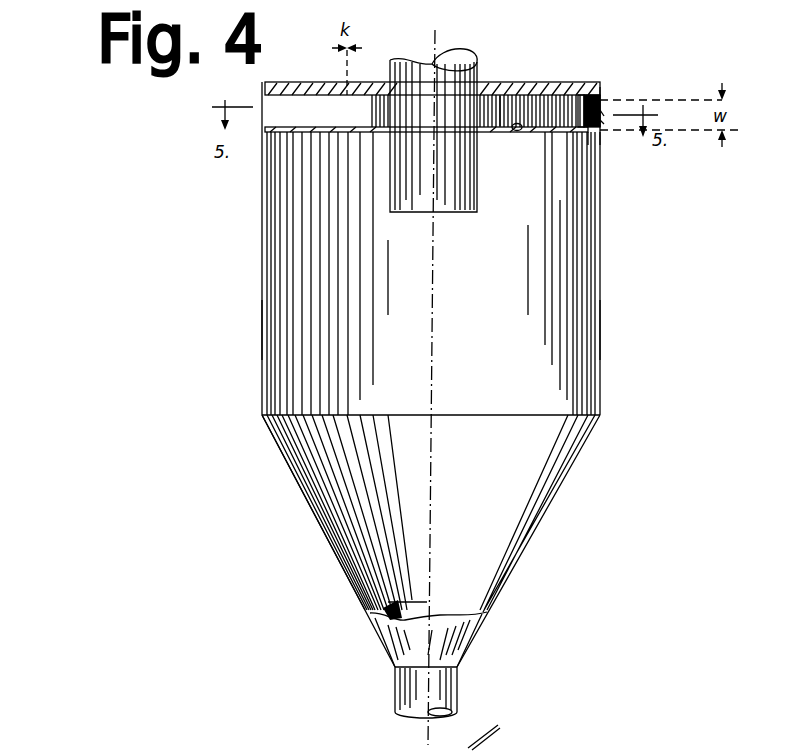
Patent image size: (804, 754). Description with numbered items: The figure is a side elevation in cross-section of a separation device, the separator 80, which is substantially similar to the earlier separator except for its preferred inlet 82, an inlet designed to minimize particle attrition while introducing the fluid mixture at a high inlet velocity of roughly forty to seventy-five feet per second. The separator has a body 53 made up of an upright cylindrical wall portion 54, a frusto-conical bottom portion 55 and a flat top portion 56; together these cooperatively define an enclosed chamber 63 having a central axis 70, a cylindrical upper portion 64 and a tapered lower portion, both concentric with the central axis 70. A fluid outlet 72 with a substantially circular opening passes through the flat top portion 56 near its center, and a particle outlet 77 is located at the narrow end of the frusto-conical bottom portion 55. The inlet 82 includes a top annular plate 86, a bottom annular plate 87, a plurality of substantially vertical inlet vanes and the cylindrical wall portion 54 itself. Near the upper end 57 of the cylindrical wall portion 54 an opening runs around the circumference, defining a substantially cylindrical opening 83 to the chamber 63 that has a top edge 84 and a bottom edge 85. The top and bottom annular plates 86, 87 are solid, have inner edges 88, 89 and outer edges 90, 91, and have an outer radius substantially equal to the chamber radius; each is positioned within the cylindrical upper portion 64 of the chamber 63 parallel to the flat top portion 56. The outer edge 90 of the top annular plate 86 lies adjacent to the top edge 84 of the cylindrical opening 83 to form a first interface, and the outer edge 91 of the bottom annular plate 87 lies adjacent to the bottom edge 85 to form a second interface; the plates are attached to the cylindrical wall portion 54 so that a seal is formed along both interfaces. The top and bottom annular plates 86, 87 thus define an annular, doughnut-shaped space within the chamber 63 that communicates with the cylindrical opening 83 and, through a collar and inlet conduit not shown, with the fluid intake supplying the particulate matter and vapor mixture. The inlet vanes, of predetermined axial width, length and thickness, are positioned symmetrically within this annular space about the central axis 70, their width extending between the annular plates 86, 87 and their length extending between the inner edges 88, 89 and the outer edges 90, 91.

The body 53 is at (628, 335).
The upright cylindrical wall portion 54 is at (603, 288).
The frusto-conical bottom portion 55 is at (542, 517).
The flat top portion 56 is at (484, 85).
The upper end 57 is at (605, 123).
The enclosed chamber 63 is at (330, 302).
The cylindrical upper portion 64 is at (368, 150).
The central axis 70 is at (372, 613).
The fluid outlet 72 is at (417, 68).
The particle outlet 77 is at (470, 679).
The separator 80 is at (200, 355).
The inlet 82 is at (642, 77).
The cylindrical opening 83 is at (605, 108).
The top edge 84 is at (601, 97).
The bottom edge 85 is at (605, 118).
The top annular plate 86 is at (514, 84).
The bottom annular plate 87 is at (546, 133).
The inner edge 88 is at (525, 102).
The inner edge 89 is at (512, 132).
The outer edge 90 is at (580, 95).
The outer edge 91 is at (603, 143).